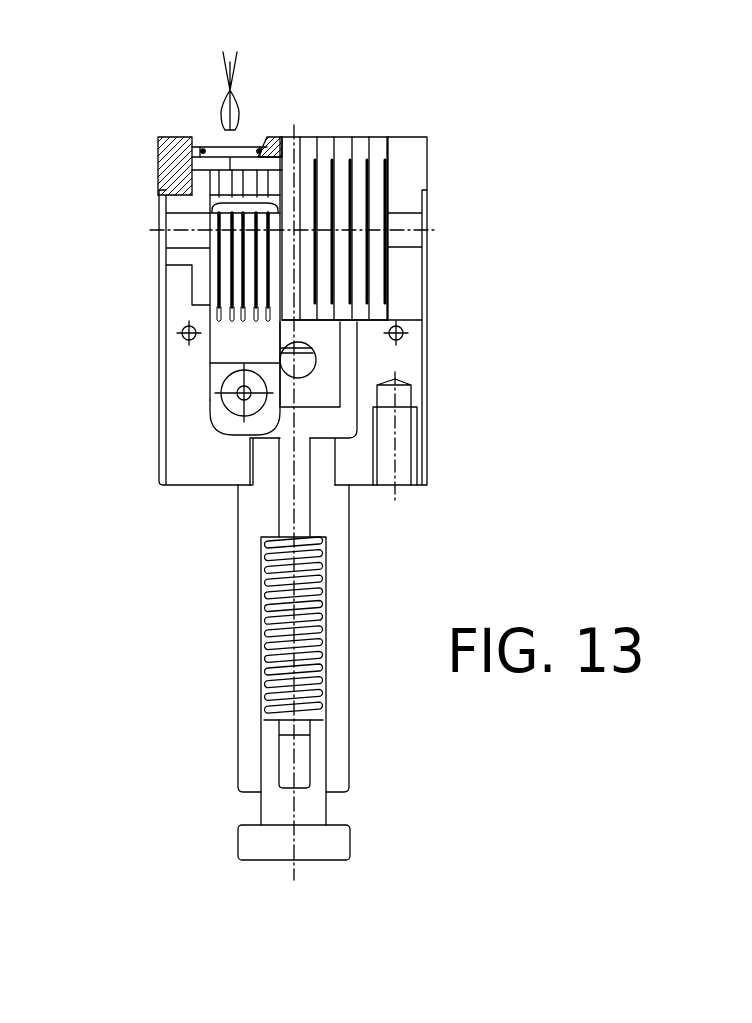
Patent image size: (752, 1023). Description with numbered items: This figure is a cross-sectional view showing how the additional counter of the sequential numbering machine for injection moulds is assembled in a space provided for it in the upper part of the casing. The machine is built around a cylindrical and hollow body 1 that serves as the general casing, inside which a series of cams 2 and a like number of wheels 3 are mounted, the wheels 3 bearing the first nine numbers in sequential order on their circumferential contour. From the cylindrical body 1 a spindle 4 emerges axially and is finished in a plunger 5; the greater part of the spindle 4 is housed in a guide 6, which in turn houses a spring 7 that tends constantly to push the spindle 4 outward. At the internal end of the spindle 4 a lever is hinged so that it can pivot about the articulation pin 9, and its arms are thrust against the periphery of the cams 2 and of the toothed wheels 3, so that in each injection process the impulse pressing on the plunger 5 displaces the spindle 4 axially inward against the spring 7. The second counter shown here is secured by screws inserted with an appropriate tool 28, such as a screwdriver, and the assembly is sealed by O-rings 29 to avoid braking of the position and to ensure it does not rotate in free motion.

The cylindrical and hollow body 1 is at (157, 208).
The cams 2 is at (225, 285).
The wheels 3 is at (375, 148).
The spindle 4 is at (283, 509).
The plunger 5 is at (258, 843).
The guide 6 is at (252, 620).
The spring 7 is at (258, 712).
The articulation pin 9 is at (290, 282).
The tool 28 is at (225, 100).
The O-rings 29 is at (200, 150).